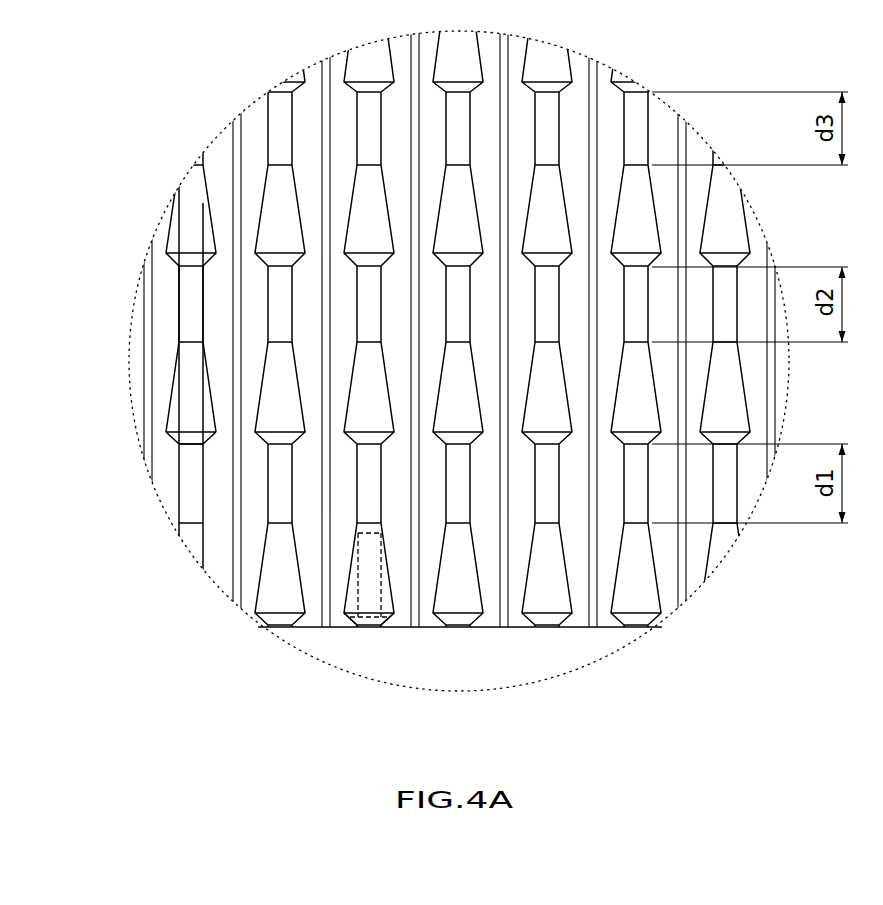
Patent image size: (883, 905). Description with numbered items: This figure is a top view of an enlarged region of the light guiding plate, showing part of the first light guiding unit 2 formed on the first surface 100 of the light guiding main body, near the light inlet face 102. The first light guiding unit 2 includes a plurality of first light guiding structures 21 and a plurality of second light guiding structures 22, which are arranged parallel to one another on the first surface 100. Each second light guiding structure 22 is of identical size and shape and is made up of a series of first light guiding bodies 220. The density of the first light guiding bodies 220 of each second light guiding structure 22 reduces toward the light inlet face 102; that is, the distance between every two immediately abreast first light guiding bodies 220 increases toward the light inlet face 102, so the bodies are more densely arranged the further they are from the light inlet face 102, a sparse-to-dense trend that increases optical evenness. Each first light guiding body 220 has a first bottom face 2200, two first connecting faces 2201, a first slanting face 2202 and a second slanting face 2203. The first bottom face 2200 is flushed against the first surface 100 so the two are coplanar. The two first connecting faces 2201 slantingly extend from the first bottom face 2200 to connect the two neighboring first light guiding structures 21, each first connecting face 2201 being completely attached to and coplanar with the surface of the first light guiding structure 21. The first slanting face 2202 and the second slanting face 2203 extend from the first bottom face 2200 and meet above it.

The first surface 100 is at (193, 303).
The light inlet face 102 is at (573, 627).
The first light guiding unit 2 is at (188, 313).
The first light guiding structure 21 is at (215, 500).
The second light guiding structure 22 is at (201, 313).
The first light guiding body 220 is at (270, 573).
The first bottom face 2200 is at (370, 592).
The first connecting face 2201 is at (352, 627).
The first slanting face 2202 is at (183, 437).
The second slanting face 2203 is at (192, 395).